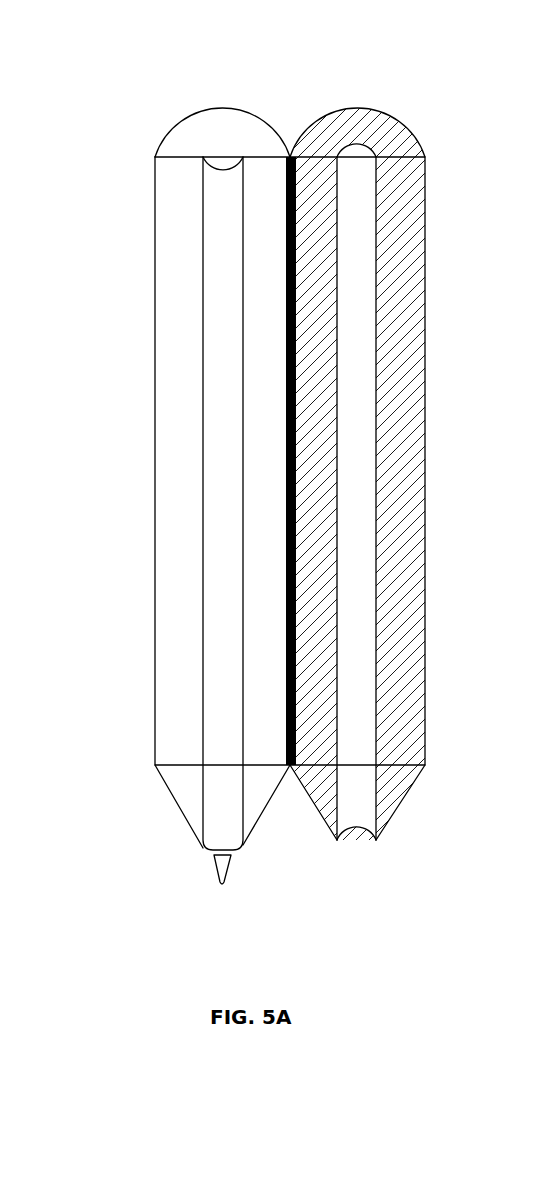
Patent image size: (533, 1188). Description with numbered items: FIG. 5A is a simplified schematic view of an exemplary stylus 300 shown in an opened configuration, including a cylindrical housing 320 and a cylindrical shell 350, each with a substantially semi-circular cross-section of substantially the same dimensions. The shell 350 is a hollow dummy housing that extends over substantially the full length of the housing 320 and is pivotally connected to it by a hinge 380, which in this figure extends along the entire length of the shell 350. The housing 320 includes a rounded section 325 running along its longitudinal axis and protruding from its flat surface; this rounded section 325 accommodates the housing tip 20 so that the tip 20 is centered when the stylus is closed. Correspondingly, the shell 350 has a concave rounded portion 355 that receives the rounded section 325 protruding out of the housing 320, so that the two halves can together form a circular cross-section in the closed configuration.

The microneedle device 300 is at (140, 229).
The housing 320 is at (233, 140).
The rounded section 325 is at (218, 490).
The housing tip 20 is at (216, 873).
The shell 350 is at (370, 132).
The concave rounded portion 355 is at (358, 637).
The hinge 380 is at (290, 768).